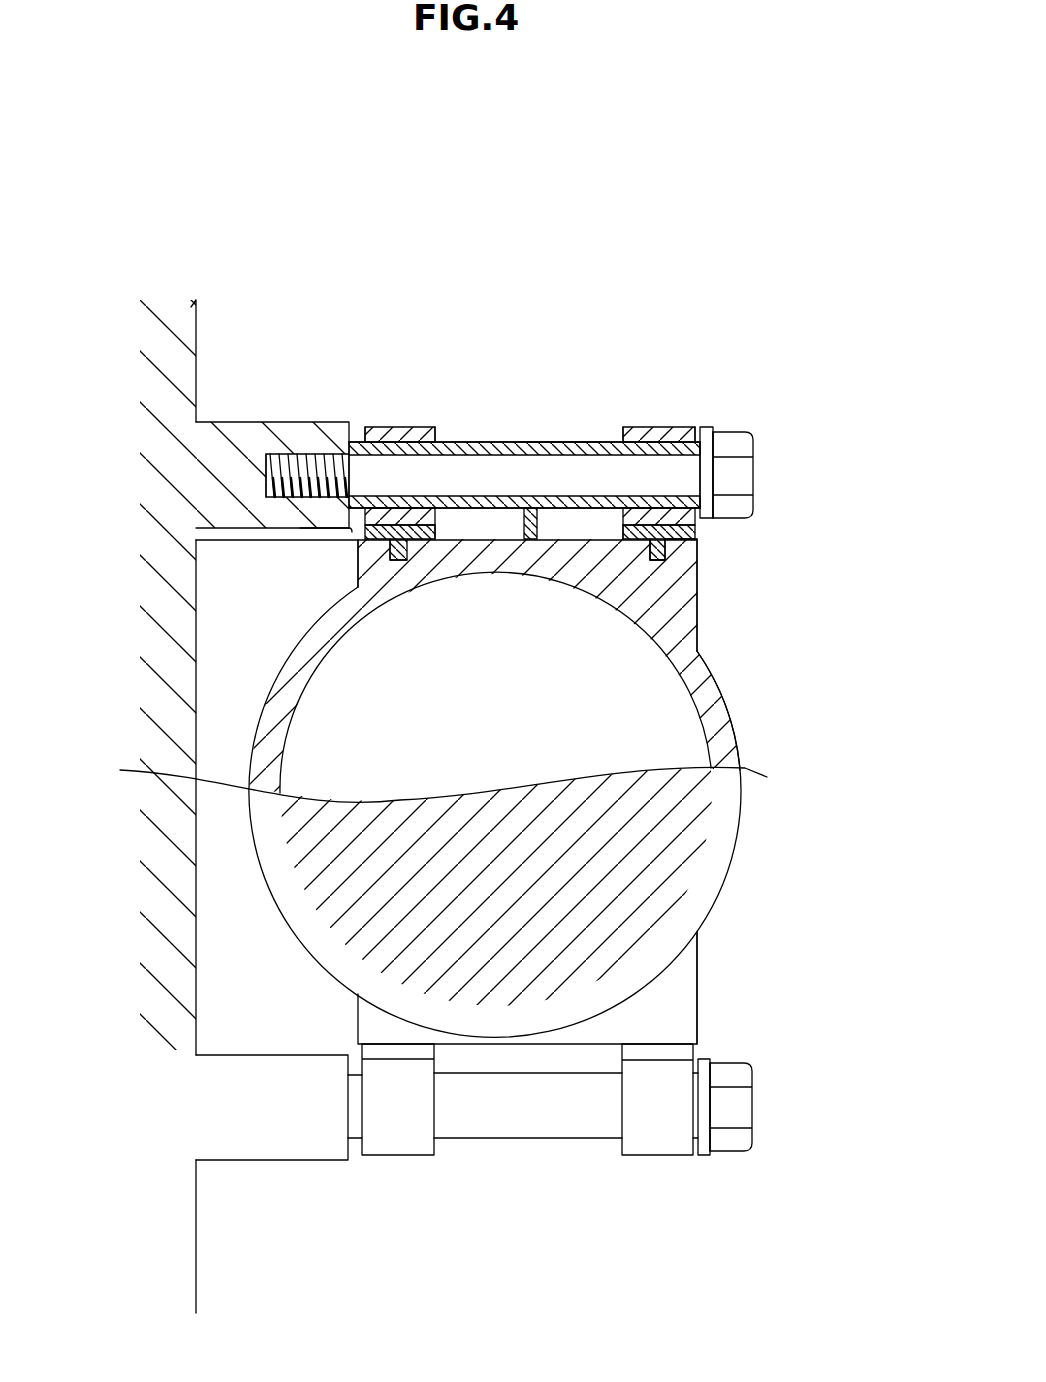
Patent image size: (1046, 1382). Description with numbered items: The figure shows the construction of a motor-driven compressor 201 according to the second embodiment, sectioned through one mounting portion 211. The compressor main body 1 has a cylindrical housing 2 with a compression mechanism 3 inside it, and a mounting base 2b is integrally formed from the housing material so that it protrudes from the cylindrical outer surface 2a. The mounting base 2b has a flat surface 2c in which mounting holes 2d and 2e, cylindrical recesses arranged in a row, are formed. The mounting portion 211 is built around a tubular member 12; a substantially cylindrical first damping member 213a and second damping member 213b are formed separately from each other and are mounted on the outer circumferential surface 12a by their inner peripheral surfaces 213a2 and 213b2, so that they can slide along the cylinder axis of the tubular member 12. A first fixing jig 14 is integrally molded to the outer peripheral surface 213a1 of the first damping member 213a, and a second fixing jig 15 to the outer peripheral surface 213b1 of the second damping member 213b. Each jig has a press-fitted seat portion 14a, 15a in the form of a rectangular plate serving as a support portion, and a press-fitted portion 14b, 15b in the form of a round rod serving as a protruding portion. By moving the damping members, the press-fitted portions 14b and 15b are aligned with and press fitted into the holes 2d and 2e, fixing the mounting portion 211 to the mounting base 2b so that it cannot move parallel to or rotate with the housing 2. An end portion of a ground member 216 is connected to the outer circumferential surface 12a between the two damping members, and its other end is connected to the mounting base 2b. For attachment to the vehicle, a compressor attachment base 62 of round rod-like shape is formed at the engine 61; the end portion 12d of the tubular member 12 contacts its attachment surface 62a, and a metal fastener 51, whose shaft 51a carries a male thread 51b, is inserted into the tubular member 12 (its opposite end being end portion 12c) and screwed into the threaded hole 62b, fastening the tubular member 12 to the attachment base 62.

The compressor main body 1 is at (728, 874).
The housing 2 is at (732, 707).
The cylindrical outer surface 2a is at (742, 748).
The mounting base 2b is at (683, 622).
The flat surface 2c is at (664, 548).
The mounting hole 2d is at (690, 562).
The mounting hole 2e is at (358, 582).
The compression mechanism 3 is at (345, 893).
The tubular member 12 is at (508, 442).
The outer circumferential surface 12a is at (555, 442).
The head-side end of sleeve 12c is at (703, 447).
The end portion 12d is at (349, 450).
The first fixing jig 14 is at (697, 530).
The press-fitted seat portion 14a is at (621, 537).
The press-fitted portion 14b is at (651, 557).
The second fixing jig 15 is at (358, 545).
The press-fitted seat portion 15a is at (441, 537).
The press-fitted portion 15b is at (399, 560).
The fastener 51 is at (753, 470).
The shaft 51a is at (712, 498).
The male thread 51b is at (266, 455).
The engine 61 is at (201, 318).
The compressor attachment base 62 is at (228, 422).
The attachment surface 62a is at (352, 532).
The threaded hole 62b is at (266, 478).
The motor-driven compressor 201 is at (750, 276).
The mounting portion 211 is at (713, 359).
The first damping member 213a is at (660, 427).
The outer peripheral surface 213a1 is at (682, 427).
The inner peripheral surface 213a2 is at (622, 446).
The second damping member 213b is at (410, 427).
The outer peripheral surface 213b1 is at (380, 427).
The inner peripheral surface 213b2 is at (446, 445).
The ground member 216 is at (528, 540).